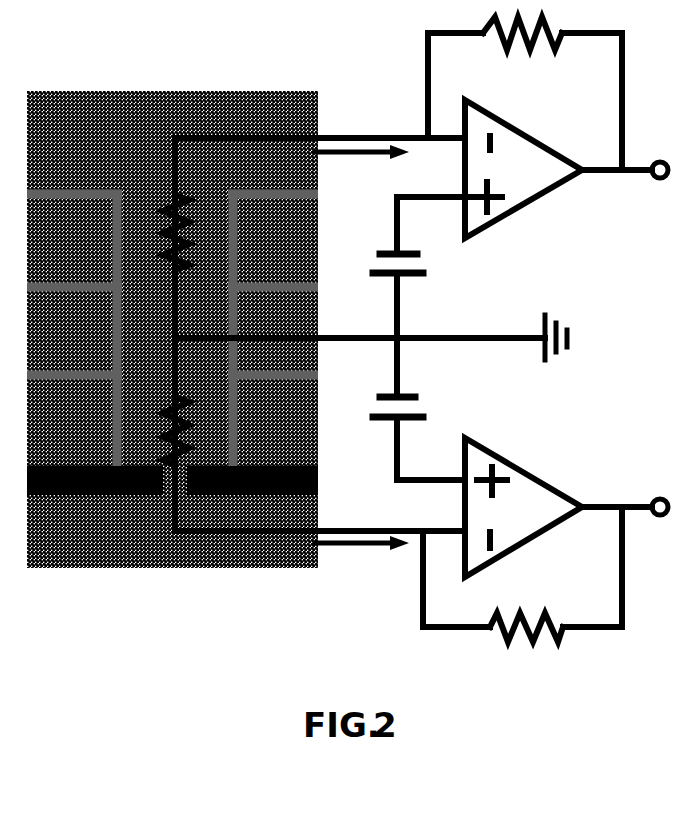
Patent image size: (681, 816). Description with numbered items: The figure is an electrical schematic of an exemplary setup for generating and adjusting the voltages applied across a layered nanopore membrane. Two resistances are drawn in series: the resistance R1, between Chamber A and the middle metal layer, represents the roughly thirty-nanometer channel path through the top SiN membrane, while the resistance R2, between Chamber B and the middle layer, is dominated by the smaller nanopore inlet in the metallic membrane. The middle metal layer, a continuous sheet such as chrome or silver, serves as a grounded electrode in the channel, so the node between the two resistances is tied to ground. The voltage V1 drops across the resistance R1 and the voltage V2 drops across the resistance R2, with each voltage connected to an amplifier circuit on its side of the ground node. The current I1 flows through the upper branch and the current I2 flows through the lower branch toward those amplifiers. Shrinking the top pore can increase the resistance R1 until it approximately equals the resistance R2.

The resistance R1 is at (146, 232).
The resistance R2 is at (146, 431).
The current I1 is at (362, 173).
The current I2 is at (362, 565).
The voltage V1 is at (424, 280).
The voltage V2 is at (423, 392).